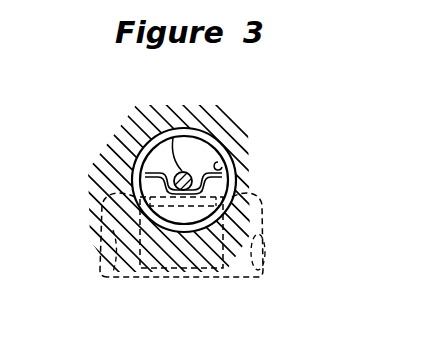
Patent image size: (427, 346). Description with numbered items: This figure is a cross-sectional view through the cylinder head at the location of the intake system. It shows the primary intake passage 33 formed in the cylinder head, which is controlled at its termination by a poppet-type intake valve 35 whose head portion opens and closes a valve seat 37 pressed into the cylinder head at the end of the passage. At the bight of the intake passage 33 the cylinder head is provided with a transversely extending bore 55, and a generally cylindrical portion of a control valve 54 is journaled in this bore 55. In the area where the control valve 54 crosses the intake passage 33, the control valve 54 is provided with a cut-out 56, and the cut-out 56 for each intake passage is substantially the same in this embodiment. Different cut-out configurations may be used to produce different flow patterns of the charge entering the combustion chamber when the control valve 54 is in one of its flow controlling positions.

The intake passage 33 is at (226, 177).
The intake valve 35 is at (155, 122).
The valve seat 37 is at (232, 140).
The control valve 54 is at (245, 278).
The bore 55 is at (105, 270).
The cut-out 56 is at (132, 165).